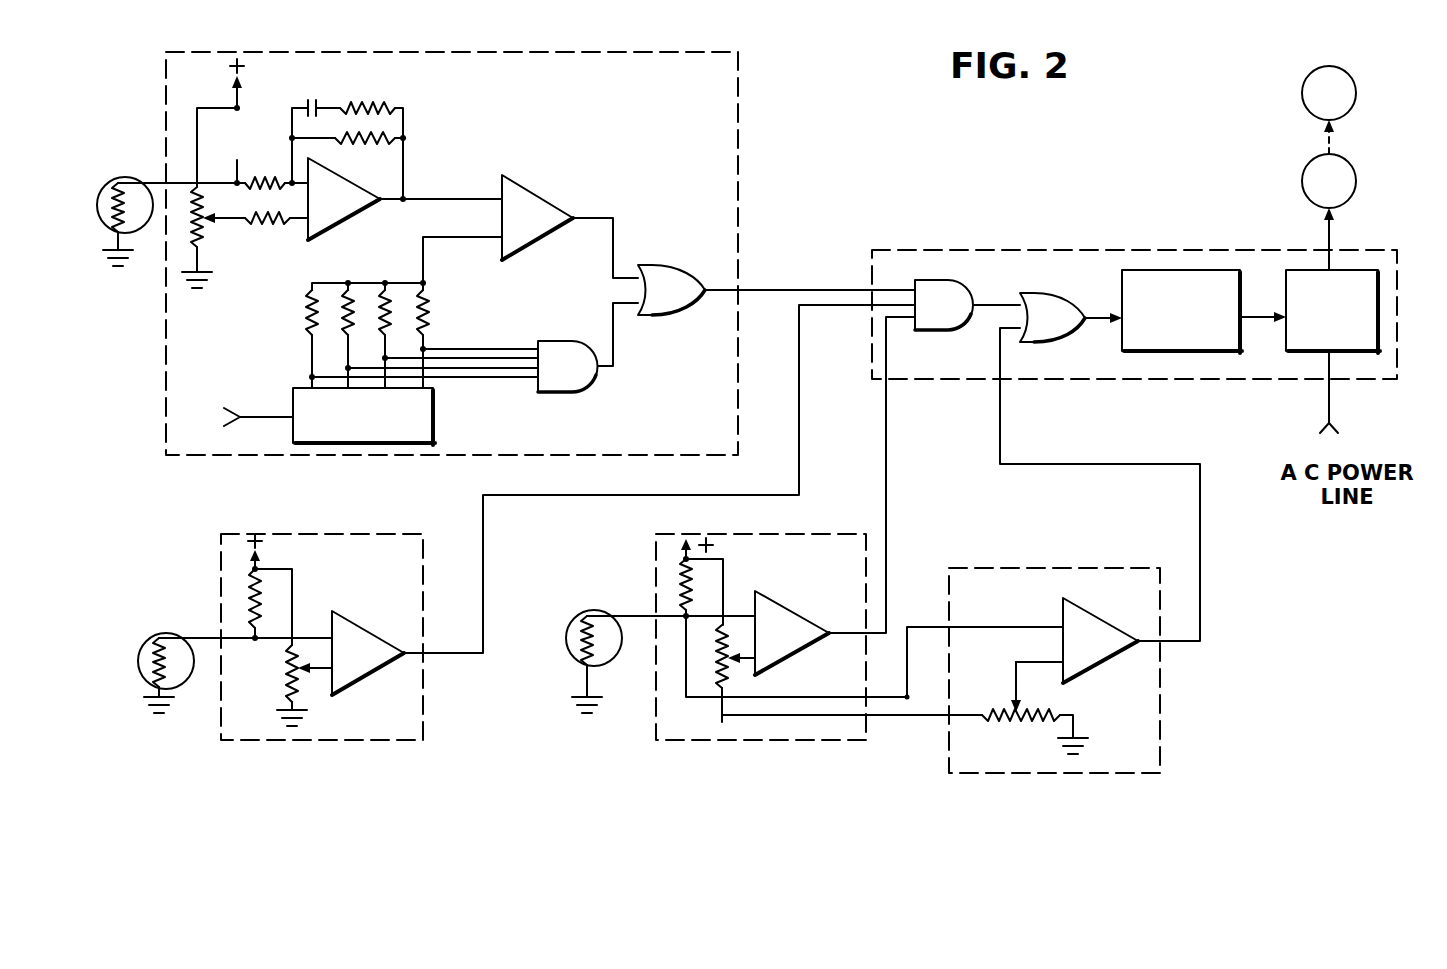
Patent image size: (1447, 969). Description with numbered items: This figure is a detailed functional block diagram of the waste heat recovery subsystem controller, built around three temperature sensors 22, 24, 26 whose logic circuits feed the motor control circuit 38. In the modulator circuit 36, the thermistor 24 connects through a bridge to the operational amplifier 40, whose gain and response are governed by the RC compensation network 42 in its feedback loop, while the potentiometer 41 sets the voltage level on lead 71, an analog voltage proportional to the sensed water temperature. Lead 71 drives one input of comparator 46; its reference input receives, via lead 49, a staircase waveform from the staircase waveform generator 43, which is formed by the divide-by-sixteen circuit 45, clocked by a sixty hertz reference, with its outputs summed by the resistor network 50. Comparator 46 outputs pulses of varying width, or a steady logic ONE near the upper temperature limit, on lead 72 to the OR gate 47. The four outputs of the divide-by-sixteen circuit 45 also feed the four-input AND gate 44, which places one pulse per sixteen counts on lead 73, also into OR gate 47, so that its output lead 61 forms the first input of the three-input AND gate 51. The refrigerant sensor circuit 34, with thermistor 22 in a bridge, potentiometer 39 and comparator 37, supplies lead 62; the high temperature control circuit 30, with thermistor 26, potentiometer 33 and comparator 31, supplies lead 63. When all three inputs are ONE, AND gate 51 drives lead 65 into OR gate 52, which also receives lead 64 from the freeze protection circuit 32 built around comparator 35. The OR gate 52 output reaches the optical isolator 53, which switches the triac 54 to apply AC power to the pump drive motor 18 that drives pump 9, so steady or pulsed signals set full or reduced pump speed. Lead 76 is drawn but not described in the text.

The pump 9 is at (1357, 95).
The pump drive motor 18 is at (1356, 185).
The thermistor 22 is at (165, 634).
The thermistor 24 is at (140, 160).
The thermistor 26 is at (574, 615).
The high temperature control circuit 30 is at (822, 529).
The comparator 31 is at (795, 613).
The freeze protection circuit 32 is at (982, 568).
The potentiometer 33 is at (712, 692).
The refrigerant sensor circuit 34 is at (392, 527).
The comparator 35 is at (1106, 622).
The modulator circuit 36 is at (738, 155).
The comparator 37 is at (386, 638).
The motor control circuit 38 is at (1025, 251).
The potentiometer 39 is at (290, 686).
The operational amplifier 40 is at (356, 222).
The potentiometer 41 is at (180, 262).
The RC compensation network 42 is at (357, 90).
The staircase waveform generator 43 is at (270, 337).
The four-input AND gate 44 is at (550, 341).
The divide-by-16 circuit 45 is at (433, 425).
The comparator 46 is at (545, 196).
The OR gate 47 is at (668, 268).
The lead 49 is at (423, 252).
The resistor network 50 is at (431, 325).
The three-input AND gate 51 is at (952, 281).
The OR gate 52 is at (1040, 296).
The optical isolator 53 is at (1120, 348).
The triac 54 is at (1378, 335).
The lead 61 is at (803, 287).
The lead 62 is at (800, 428).
The lead 63 is at (887, 468).
The lead 64 is at (1001, 440).
The lead 65 is at (992, 304).
The lead 71 is at (436, 199).
The lead 72 is at (615, 240).
The lead 73 is at (615, 355).
The line 76 is at (783, 697).